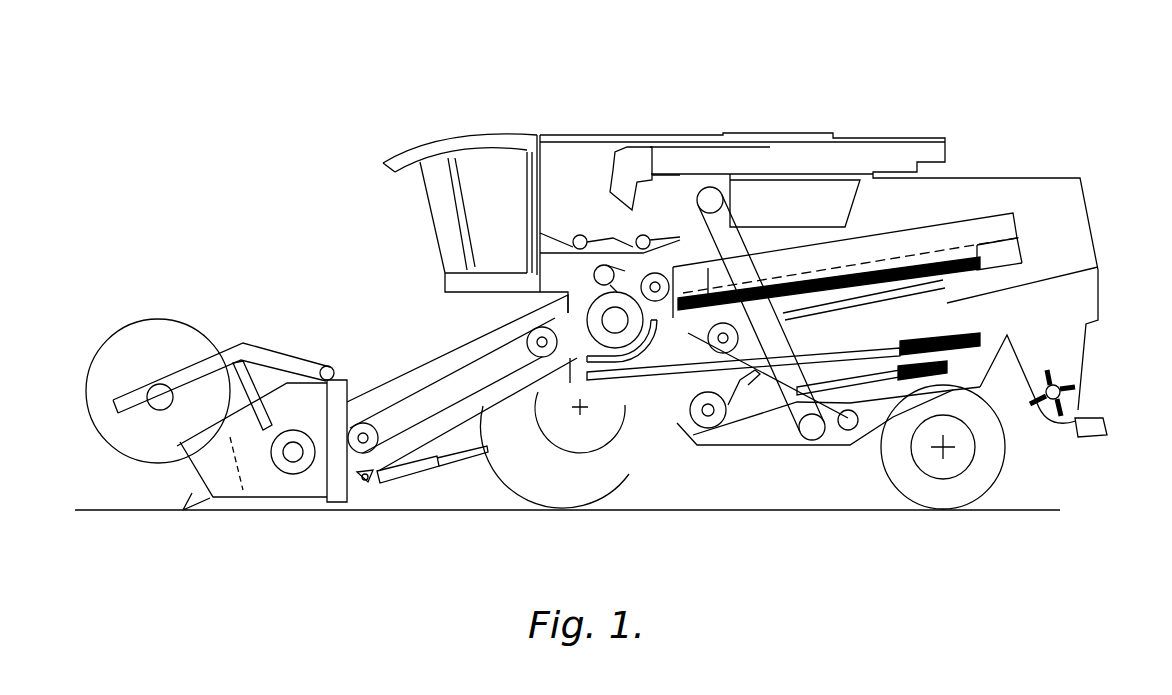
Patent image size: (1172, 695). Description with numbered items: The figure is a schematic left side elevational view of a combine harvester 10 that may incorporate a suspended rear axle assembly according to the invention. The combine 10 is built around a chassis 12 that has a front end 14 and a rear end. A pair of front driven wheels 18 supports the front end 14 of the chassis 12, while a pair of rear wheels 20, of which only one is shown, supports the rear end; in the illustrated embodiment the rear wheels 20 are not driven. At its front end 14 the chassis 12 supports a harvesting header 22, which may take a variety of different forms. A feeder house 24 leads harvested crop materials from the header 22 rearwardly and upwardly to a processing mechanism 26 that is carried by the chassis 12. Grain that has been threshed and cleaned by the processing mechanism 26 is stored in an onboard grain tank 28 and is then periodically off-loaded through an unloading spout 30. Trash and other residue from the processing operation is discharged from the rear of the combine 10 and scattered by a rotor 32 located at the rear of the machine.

The combine harvester 10 is at (883, 73).
The chassis 12 is at (778, 451).
The front end 14 is at (677, 424).
The front driven wheels 18 is at (528, 475).
The rear wheels 20 is at (963, 490).
The harvesting header 22 is at (260, 483).
The feeder house 24 is at (398, 380).
The processing mechanism 26 is at (908, 245).
The grain tank 28 is at (585, 170).
The unloading spout 30 is at (768, 160).
The rotor 32 is at (1056, 384).